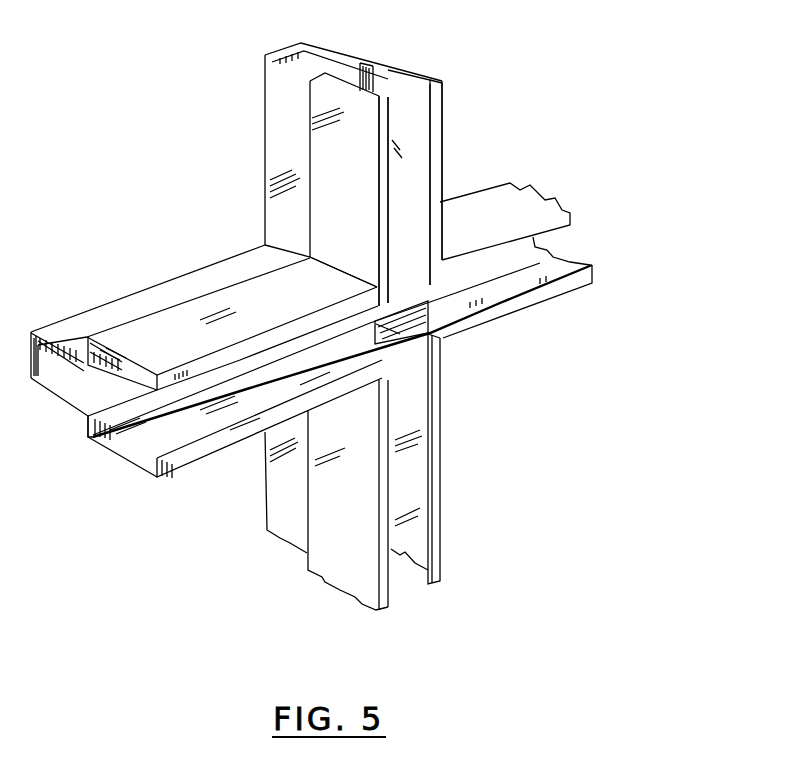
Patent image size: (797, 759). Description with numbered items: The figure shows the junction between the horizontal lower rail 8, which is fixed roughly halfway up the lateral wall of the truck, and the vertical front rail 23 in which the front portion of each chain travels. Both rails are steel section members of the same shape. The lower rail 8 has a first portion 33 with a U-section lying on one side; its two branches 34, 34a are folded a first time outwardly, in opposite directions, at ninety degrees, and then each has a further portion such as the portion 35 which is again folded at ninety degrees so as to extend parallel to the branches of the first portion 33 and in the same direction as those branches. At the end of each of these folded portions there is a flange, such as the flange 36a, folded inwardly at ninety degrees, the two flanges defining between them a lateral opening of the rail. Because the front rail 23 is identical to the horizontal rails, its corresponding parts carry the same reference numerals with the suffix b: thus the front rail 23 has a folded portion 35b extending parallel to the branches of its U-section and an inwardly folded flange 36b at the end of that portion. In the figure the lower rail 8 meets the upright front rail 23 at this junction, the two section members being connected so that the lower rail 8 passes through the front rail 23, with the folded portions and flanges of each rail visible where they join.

The front rail 23 is at (311, 325).
The folded portion of front rail 35b is at (398, 80).
The flange of front rail 36b is at (388, 132).
The first portion 33 is at (177, 288).
The lower rail 8 is at (222, 310).
The folded portion 35 is at (208, 343).
The branch 34 is at (390, 327).
The flange 36a is at (231, 441).
The branch 34a is at (93, 438).